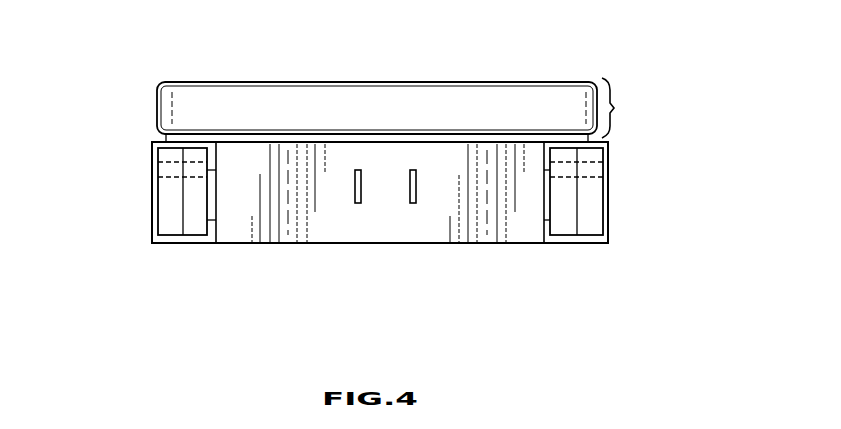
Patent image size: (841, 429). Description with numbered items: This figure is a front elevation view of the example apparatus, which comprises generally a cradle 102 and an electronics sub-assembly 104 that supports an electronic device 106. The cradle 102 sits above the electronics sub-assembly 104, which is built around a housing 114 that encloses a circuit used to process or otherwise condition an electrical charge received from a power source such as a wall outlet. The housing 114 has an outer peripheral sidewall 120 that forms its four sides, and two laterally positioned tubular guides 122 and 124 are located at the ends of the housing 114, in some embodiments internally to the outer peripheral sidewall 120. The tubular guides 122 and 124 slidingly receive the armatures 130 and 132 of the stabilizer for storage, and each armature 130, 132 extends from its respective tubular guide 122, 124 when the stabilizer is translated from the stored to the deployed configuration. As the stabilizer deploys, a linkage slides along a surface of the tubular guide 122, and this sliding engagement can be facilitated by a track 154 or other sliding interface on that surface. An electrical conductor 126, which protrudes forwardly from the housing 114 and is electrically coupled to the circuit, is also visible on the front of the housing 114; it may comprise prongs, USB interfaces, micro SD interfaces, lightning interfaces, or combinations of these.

The cradle 102 is at (614, 108).
The electronics sub-assembly 104 is at (108, 234).
The electronic device 106 is at (478, 105).
The housing 114 is at (528, 243).
The outer peripheral sidewall 120 is at (607, 225).
The tubular guide 122 is at (151, 158).
The tubular guide 124 is at (611, 150).
The electrical conductor 126 is at (412, 206).
The armature 130 is at (151, 197).
The armature 132 is at (611, 177).
The track 154 is at (216, 193).